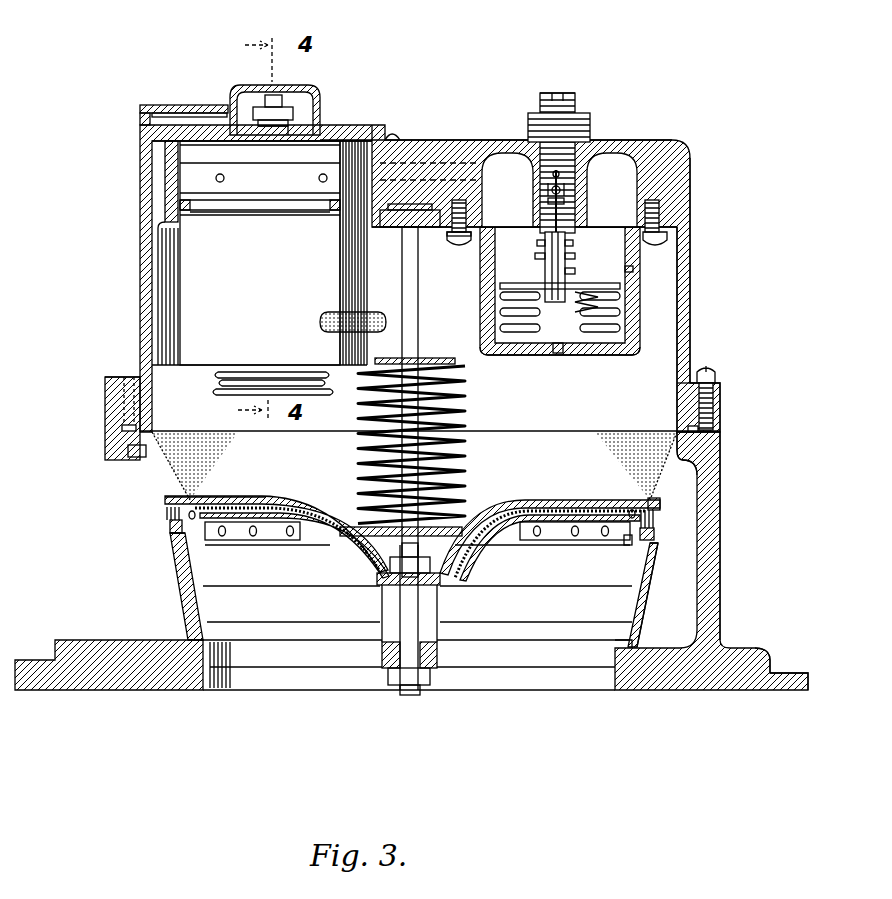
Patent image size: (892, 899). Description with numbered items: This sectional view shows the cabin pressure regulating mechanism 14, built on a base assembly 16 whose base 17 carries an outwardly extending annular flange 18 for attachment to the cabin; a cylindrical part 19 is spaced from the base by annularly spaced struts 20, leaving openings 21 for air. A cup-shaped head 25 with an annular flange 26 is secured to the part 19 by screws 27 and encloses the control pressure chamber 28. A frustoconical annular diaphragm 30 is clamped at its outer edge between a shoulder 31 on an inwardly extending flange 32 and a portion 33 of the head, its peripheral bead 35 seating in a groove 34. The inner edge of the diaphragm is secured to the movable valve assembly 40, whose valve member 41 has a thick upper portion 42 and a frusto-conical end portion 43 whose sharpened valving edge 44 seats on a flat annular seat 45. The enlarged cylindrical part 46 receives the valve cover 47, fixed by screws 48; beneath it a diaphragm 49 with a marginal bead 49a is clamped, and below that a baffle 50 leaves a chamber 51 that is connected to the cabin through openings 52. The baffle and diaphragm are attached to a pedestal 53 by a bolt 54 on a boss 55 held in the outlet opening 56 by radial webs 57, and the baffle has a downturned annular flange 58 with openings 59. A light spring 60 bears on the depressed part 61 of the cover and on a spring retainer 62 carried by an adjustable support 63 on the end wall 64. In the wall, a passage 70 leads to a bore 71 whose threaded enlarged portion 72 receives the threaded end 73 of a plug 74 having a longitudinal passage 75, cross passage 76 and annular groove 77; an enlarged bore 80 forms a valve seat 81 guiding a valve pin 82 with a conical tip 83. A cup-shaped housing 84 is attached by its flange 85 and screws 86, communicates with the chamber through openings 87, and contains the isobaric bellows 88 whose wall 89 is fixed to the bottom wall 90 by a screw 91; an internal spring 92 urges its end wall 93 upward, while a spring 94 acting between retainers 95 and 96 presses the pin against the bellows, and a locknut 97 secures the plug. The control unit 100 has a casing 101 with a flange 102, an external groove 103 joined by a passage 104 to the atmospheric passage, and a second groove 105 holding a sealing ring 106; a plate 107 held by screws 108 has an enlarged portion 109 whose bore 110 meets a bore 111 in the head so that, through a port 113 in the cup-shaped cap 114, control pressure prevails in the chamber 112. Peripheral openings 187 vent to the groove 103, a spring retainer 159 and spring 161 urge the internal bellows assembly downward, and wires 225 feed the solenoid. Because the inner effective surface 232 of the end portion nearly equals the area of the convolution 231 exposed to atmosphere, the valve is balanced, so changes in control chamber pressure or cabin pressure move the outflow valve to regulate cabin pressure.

The mechanism 14 is at (734, 302).
The base assembly 16 is at (744, 475).
The base 17 is at (742, 650).
The annular flange 18 is at (782, 672).
The cylindrical part 19 is at (112, 410).
The struts 20 is at (710, 590).
The openings 21 is at (127, 598).
The cup-shaped head 25 is at (684, 270).
The annular flange 26 is at (720, 390).
The screws 27 is at (716, 375).
The control pressure chamber 28 is at (691, 338).
The annular diaphragm 30 is at (562, 431).
The shoulder 31 is at (700, 450).
The inwardly extending flange 32 is at (665, 455).
The portion 33 is at (680, 408).
The groove 34 is at (130, 440).
The peripheral bead 35 is at (124, 428).
The movable valve assembly 40 is at (534, 488).
The movable valve member 41 is at (652, 575).
The upper portion 42 is at (660, 552).
The frusto-conical end portion 43 is at (641, 625).
The valving edge 44 is at (622, 644).
The annular seat 45 is at (192, 638).
The enlarged cylindrical part 46 is at (662, 503).
The valve cover 47 is at (562, 500).
The screws 48 is at (656, 518).
The diaphragm 49 is at (348, 553).
The marginal bead 49a is at (654, 532).
The baffle 50 is at (272, 512).
The chamber 51 is at (458, 563).
The openings 52 is at (196, 510).
The pedestal 53 is at (384, 605).
The bolt 54 is at (432, 660).
The boss 55 is at (386, 672).
The opening 56 is at (306, 680).
The radial webs 57 is at (256, 656).
The downturned annular flange 58 is at (222, 545).
The openings 59 is at (256, 537).
The spring 60 is at (468, 416).
The central depressed part 61 is at (455, 527).
The spring retainer 62 is at (445, 358).
The support 63 is at (418, 300).
The end wall 64 is at (478, 150).
The passage 70 is at (432, 175).
The bore 71 is at (572, 200).
The enlarged portion 72 is at (578, 150).
The threaded end 73 is at (578, 97).
The plug 74 is at (573, 213).
The longitudinal passage 75 is at (570, 189).
The cross passage 76 is at (550, 176).
The annular groove 77 is at (562, 178).
The enlarged bore 80 is at (567, 238).
The valve seat 81 is at (545, 222).
The valve pin 82 is at (567, 258).
The conical tip 83 is at (547, 190).
The cup-shaped housing 84 is at (628, 305).
The flange 85 is at (660, 232).
The screws 86 is at (668, 246).
The openings 87 is at (633, 268).
The bellows 88 is at (620, 328).
The wall 89 is at (528, 356).
The bottom wall 90 is at (489, 356).
The screw 91 is at (585, 356).
The spring 92 is at (612, 297).
The end wall 93 is at (535, 283).
The spring 94 is at (535, 257).
The spring retainer 95 is at (575, 271).
The spring retainer 96 is at (537, 243).
The locknut 97 is at (588, 126).
The control unit 100 is at (155, 254).
The hollow cylindrical casing 101 is at (260, 244).
The flange 102 is at (382, 128).
The external groove 103 is at (186, 175).
The passage 104 is at (402, 163).
The second groove 105 is at (207, 210).
The sealing ring 106 is at (182, 205).
The plate 107 is at (347, 127).
The screws 108 is at (388, 128).
The enlarged portion 109 is at (190, 105).
The bore 110 is at (150, 116).
The bore 111 is at (166, 152).
The chamber 112 is at (302, 98).
The port 113 is at (202, 113).
The cup-shaped cap 114 is at (282, 93).
The spring retainer 159 is at (233, 409).
The spring 161 is at (216, 382).
The peripheral openings 187 is at (318, 178).
The wires 225 is at (384, 312).
The convolution 231 is at (628, 545).
The inner effective surface 232 is at (417, 604).